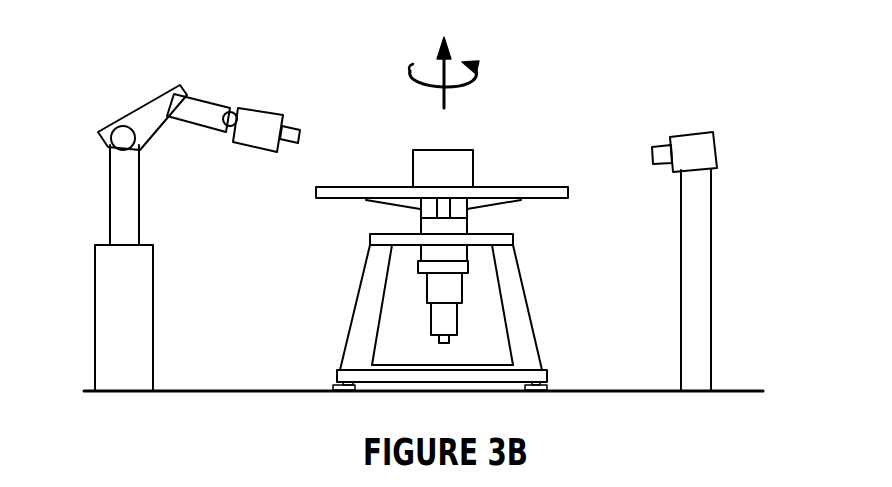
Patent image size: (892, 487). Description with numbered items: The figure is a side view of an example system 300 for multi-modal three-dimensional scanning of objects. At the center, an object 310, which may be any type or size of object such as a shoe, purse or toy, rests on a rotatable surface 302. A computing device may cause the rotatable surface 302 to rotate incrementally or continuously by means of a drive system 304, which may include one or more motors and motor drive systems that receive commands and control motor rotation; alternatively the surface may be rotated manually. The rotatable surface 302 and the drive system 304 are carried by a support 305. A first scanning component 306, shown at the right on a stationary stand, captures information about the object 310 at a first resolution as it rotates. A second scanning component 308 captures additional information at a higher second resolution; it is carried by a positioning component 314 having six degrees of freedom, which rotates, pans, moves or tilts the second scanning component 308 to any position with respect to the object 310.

The system 300 is at (325, 100).
The rotatable surface 302 is at (315, 195).
The drive system 304 is at (468, 275).
The support 305 is at (358, 317).
The first scanning component 306 is at (717, 149).
The second scanning component 308 is at (253, 148).
The object 310 is at (500, 166).
The positioning component 314 is at (138, 110).